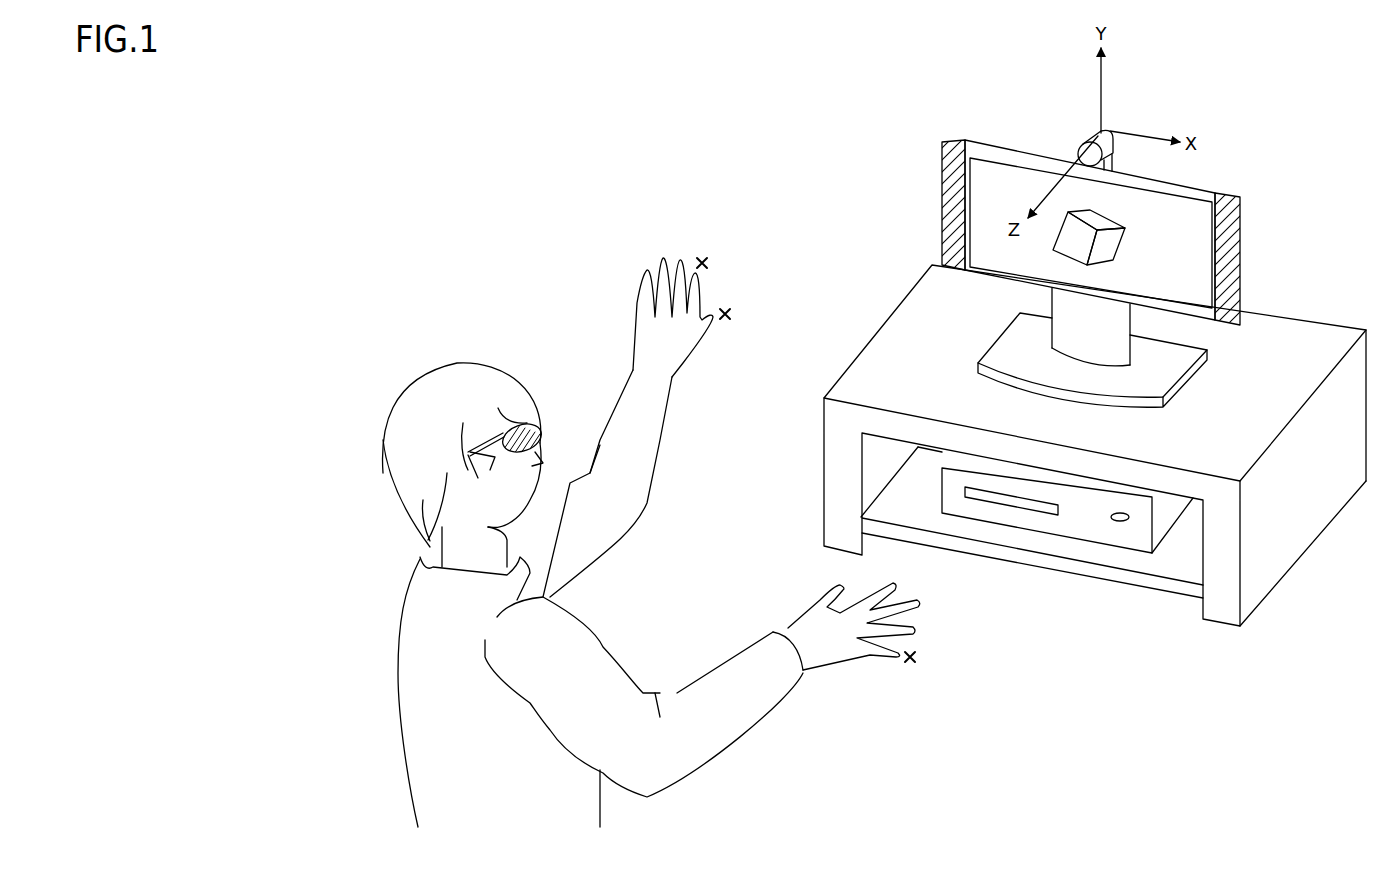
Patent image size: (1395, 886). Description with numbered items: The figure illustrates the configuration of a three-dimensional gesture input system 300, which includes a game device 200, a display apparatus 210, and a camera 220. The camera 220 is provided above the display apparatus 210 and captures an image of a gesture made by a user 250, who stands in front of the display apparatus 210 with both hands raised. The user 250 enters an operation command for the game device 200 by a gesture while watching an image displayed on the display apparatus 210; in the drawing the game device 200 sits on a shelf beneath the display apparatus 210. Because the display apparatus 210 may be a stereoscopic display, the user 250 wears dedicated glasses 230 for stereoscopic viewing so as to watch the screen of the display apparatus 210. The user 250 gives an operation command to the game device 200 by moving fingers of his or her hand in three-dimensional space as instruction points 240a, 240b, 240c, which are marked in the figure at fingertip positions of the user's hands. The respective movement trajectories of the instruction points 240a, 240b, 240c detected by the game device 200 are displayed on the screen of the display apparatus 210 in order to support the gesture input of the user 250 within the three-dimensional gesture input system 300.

The game device 200 is at (1045, 534).
The display apparatus 210 is at (1203, 186).
The camera 220 is at (1083, 144).
The dedicated glasses 230 is at (543, 441).
The instruction point 240a is at (914, 657).
The instruction point 240b is at (725, 311).
The instruction point 240c is at (702, 262).
The user 250 is at (442, 357).
The three-dimensional gesture input system 300 is at (894, 882).